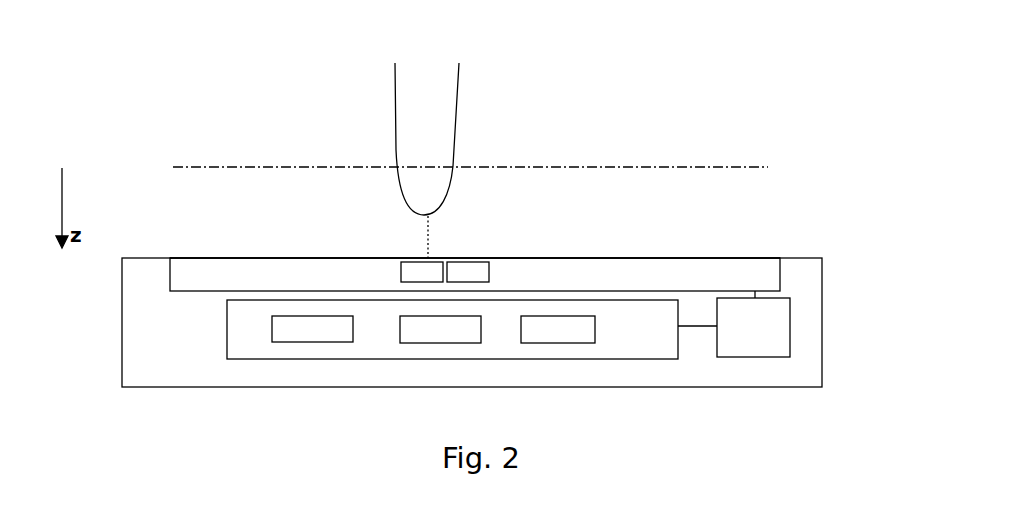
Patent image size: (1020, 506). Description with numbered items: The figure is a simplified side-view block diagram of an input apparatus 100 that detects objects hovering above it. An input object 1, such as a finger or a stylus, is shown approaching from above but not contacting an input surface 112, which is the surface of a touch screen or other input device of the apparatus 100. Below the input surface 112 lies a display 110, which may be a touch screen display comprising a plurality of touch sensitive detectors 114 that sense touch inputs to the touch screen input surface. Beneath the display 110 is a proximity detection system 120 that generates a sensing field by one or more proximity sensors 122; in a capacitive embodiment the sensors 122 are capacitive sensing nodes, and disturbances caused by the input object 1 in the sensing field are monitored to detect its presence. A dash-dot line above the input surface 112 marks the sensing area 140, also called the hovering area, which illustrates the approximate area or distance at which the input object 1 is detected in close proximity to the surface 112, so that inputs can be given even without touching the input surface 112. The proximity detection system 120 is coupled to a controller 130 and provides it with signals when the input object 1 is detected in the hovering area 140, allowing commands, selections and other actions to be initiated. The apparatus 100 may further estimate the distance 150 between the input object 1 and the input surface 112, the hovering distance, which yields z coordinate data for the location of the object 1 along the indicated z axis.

The input object 1 is at (415, 128).
The apparatus 100 is at (812, 347).
The display 110 is at (198, 268).
The input surface 112 is at (297, 257).
The touch sensitive detectors 114 is at (467, 275).
The proximity detection system 120 is at (553, 350).
The proximity sensors 122 is at (283, 335).
The controller 130 is at (735, 350).
The sensing area 140 is at (743, 178).
The distance 150 is at (430, 233).